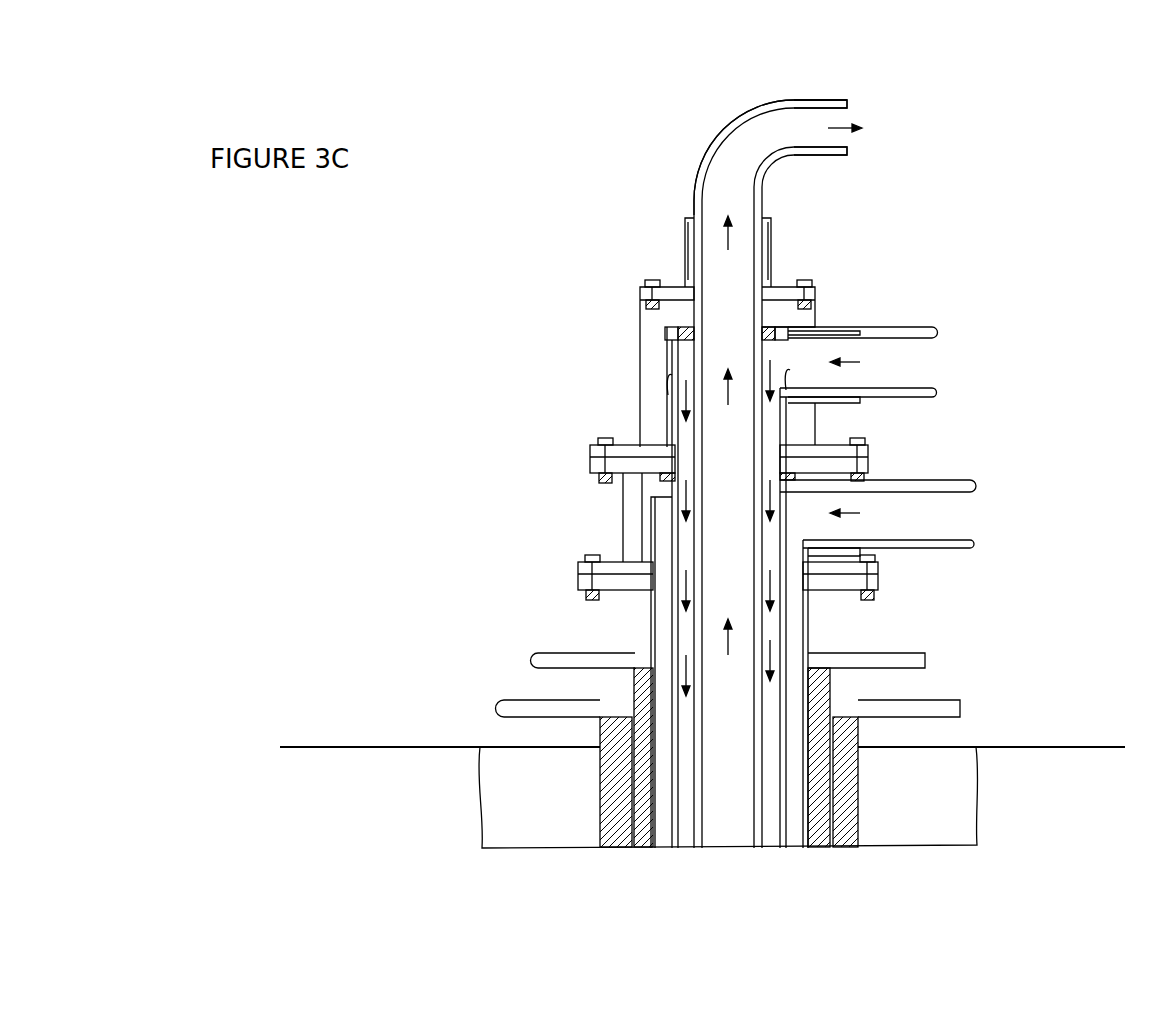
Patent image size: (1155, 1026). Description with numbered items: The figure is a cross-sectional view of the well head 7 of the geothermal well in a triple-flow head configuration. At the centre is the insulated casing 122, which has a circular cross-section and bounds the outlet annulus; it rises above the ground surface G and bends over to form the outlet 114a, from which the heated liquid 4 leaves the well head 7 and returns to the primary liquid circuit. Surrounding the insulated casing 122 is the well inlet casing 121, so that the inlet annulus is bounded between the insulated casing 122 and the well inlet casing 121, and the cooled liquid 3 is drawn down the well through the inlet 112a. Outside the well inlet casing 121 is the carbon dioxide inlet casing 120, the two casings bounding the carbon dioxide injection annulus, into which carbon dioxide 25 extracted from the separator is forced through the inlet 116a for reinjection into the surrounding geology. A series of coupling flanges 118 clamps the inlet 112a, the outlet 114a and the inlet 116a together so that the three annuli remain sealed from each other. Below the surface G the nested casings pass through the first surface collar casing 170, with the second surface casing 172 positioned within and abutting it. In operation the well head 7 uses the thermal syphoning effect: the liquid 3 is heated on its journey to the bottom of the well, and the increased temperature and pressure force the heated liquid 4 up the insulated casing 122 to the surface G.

The well head 7 is at (647, 128).
The heated liquid 4 is at (861, 136).
The liquid 3 is at (857, 365).
The carbon dioxide 25 is at (870, 516).
The outlet of the outlet annulus 114a is at (828, 100).
The inlet of the inlet annulus 112a is at (928, 330).
The inlet of the carbon dioxide injection annulus 116a is at (950, 480).
The coupling flanges 118 is at (590, 447).
The carbon dioxide inlet casing 120 is at (653, 823).
The well inlet casing 121 is at (783, 773).
The insulated casing 122 is at (703, 820).
The first surface collar casing 170 is at (600, 772).
The second surface casing 172 is at (630, 808).
The surface G is at (1072, 742).